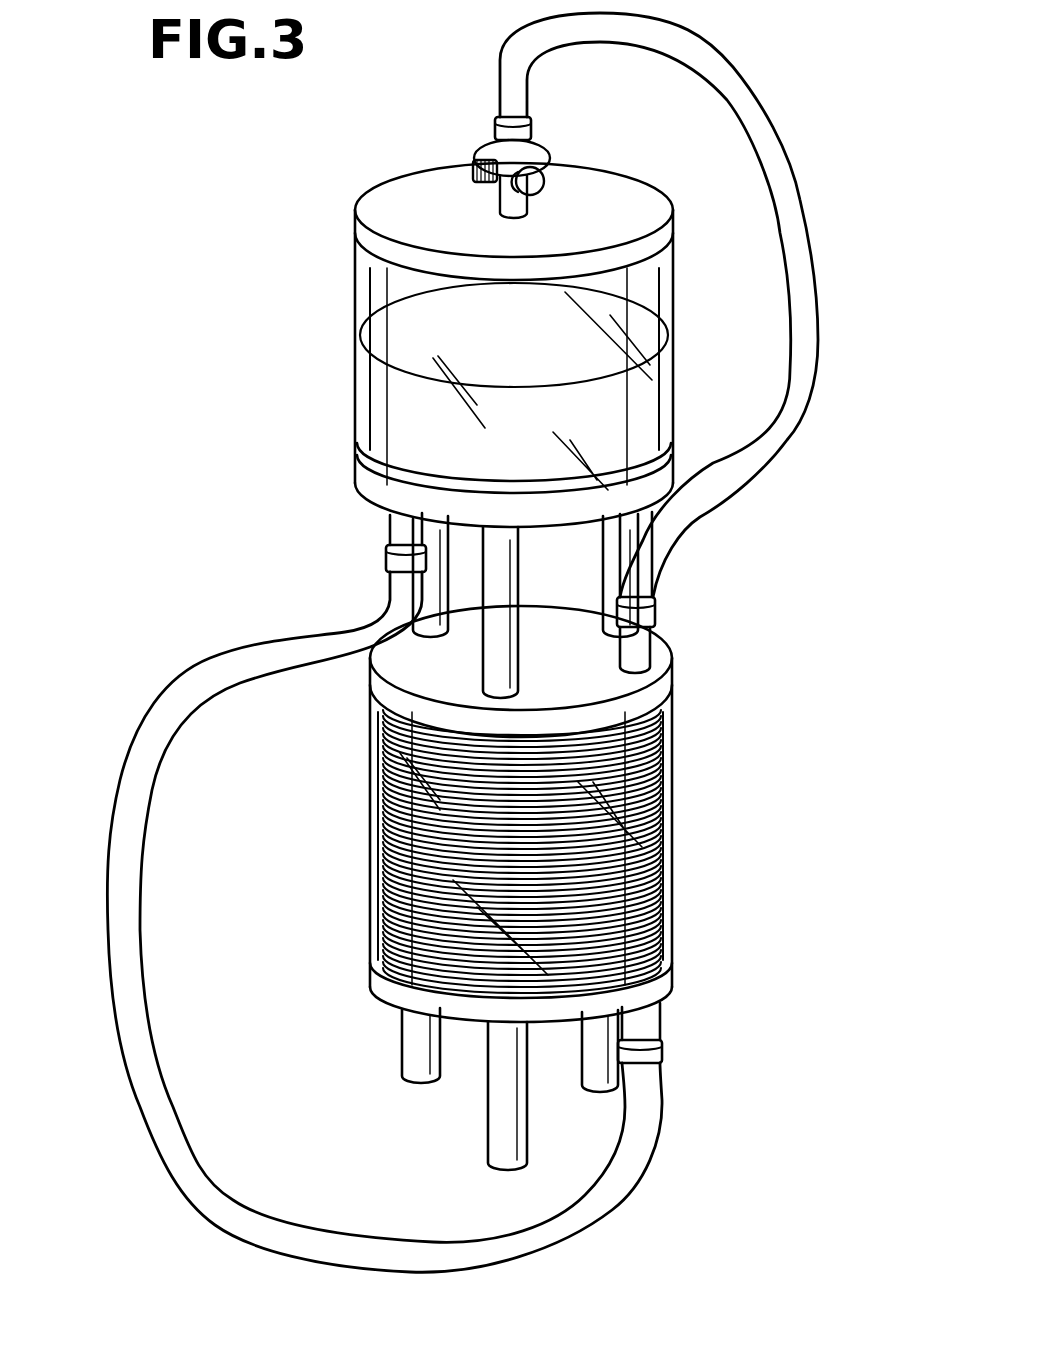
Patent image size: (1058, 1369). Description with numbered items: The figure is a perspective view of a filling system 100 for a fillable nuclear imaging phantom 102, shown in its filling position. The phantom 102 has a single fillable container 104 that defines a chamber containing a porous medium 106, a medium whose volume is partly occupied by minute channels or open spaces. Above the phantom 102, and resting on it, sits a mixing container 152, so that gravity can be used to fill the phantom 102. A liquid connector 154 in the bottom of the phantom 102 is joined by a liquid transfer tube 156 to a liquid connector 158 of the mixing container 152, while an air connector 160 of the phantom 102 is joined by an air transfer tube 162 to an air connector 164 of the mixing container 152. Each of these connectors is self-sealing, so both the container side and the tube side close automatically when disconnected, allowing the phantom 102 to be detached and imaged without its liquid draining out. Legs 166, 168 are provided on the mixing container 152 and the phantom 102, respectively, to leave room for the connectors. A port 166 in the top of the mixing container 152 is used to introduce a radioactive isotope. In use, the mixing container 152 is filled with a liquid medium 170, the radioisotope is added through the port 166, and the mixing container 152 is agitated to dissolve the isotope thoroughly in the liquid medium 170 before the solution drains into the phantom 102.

The filling system 100 is at (212, 403).
The fillable nuclear imaging phantom 102 is at (700, 853).
The fillable container 104 is at (372, 822).
The porous medium 106 is at (378, 860).
The mixing container 152 is at (320, 298).
The liquid connector 154 is at (650, 1007).
The liquid transfer tube 156 is at (205, 1218).
The liquid connector 158 is at (390, 516).
The air connector 160 is at (683, 648).
The air transfer tube 162 is at (788, 155).
The air connector 164 is at (488, 130).
The port 166 is at (477, 147).
The legs 168 is at (593, 1065).
The liquid medium 170 is at (540, 475).